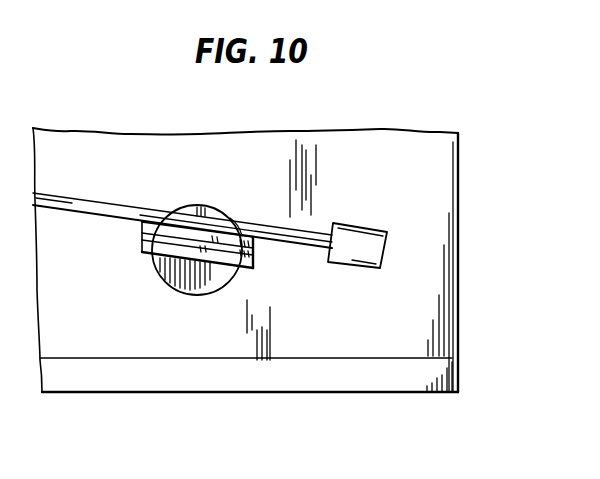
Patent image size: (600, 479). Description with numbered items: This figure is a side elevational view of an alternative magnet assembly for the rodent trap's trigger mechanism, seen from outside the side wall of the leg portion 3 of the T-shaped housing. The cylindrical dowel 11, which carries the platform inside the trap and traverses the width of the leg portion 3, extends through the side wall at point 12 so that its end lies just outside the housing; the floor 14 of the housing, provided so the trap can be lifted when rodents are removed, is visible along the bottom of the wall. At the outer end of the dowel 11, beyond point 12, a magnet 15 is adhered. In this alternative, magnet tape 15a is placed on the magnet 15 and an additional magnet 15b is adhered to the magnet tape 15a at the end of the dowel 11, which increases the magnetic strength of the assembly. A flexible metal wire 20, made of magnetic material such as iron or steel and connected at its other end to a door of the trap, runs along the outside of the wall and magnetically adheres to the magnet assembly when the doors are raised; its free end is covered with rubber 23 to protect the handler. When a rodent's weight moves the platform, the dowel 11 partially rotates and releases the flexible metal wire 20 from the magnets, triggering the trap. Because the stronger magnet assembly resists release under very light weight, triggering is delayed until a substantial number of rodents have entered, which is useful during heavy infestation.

The leg portion 3 is at (355, 153).
The dowel 11 is at (192, 208).
The point 12 is at (223, 208).
The floor 14 is at (101, 385).
The magnet 15 is at (253, 260).
The magnet tape 15a is at (253, 250).
The additional magnet 15b is at (142, 224).
The flexible metal wire 20 is at (88, 200).
The rubber 23 is at (387, 250).